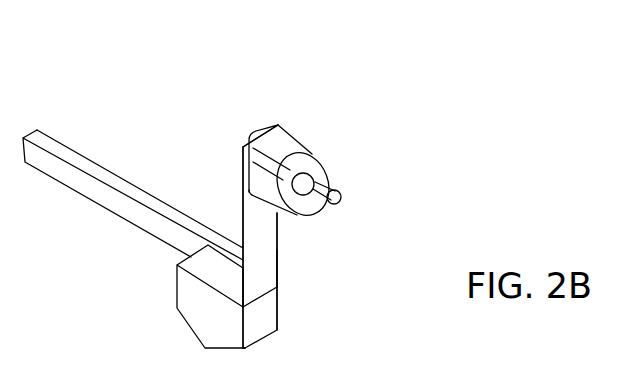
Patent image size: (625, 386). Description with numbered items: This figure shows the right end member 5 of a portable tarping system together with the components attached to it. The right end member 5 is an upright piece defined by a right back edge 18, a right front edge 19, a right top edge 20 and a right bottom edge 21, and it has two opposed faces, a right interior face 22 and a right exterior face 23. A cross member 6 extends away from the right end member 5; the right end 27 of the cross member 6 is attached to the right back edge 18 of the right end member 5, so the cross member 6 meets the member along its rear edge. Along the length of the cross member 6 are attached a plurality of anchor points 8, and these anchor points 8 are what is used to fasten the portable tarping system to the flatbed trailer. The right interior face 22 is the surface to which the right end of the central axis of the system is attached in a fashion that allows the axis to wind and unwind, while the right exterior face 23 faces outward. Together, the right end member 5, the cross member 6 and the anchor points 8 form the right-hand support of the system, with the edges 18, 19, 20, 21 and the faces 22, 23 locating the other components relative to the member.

The right end member 5 is at (278, 249).
The cross member 6 is at (45, 176).
The anchor points 8 is at (176, 310).
The right back edge 18 is at (280, 229).
The right front edge 19 is at (242, 211).
The right top edge 20 is at (265, 126).
The right bottom edge 21 is at (262, 300).
The right interior face 22 is at (247, 132).
The right exterior face 23 is at (268, 271).
The right end of the cross member 27 is at (212, 226).